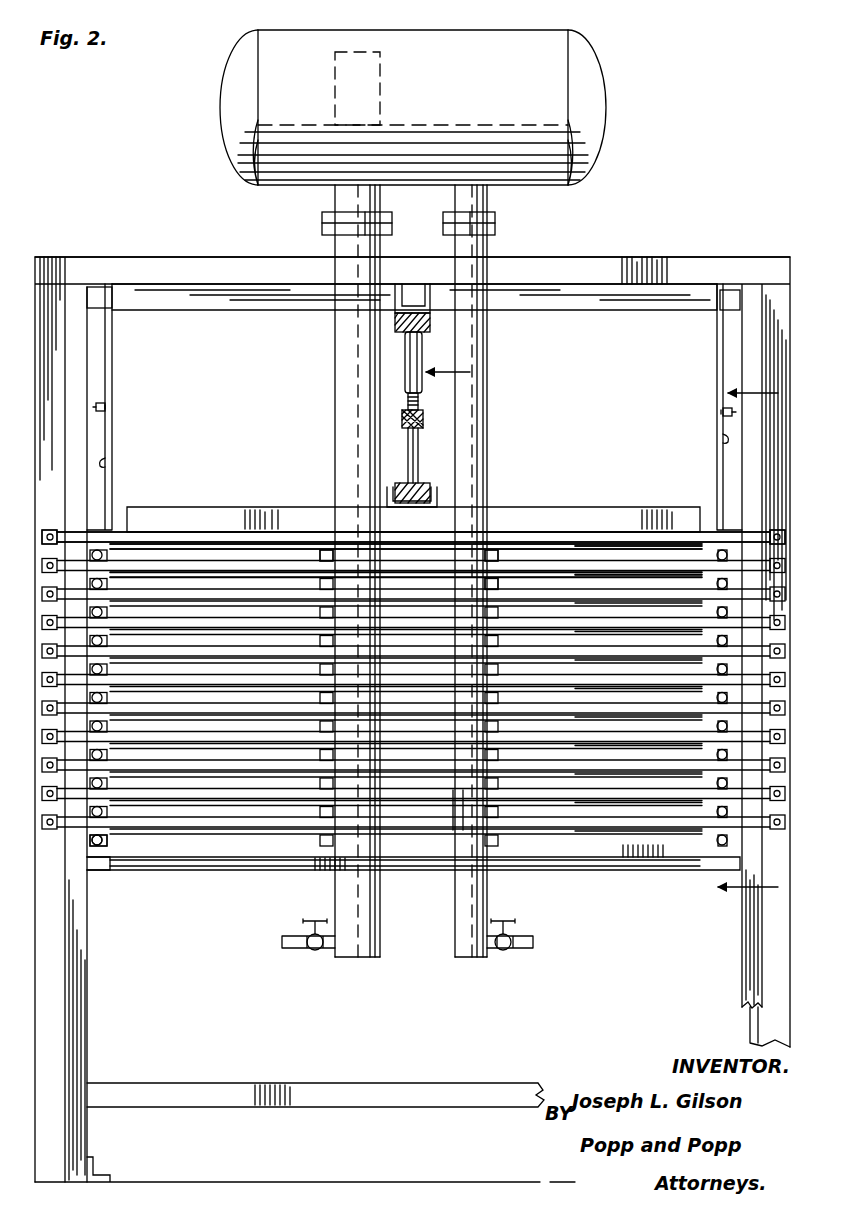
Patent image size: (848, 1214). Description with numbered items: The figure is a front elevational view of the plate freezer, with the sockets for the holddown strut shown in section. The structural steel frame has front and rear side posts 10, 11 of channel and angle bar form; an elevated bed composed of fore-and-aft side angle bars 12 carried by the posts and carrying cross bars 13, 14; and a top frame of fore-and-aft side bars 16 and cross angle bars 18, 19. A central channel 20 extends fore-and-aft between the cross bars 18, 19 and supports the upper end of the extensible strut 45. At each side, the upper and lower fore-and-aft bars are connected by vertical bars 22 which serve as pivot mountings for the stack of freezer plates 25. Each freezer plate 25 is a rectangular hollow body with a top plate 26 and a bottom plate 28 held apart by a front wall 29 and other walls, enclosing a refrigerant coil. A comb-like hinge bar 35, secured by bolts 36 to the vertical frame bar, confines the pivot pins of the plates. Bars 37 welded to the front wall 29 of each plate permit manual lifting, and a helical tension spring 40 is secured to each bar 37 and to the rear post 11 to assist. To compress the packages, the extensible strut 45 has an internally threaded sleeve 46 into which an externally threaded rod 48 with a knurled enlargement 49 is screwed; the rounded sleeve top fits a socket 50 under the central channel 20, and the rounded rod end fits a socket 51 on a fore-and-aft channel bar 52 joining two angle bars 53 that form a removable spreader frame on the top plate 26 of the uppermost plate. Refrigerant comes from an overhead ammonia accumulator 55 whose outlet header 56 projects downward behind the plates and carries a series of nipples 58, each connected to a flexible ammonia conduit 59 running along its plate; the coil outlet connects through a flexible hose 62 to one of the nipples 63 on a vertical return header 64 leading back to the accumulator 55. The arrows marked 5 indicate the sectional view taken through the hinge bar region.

The section line 5 is at (749, 624).
The front side post 10 is at (82, 975).
The rear side post 11 is at (55, 1012).
The side angle bar 12 is at (92, 870).
The cross bar 13 is at (413, 852).
The cross bar 14 is at (236, 870).
The side bar 16 is at (97, 287).
The cross angle bar 18 is at (629, 270).
The cross angle bar 19 is at (623, 310).
The central channel 20 is at (432, 302).
The vertical bar 22 is at (112, 364).
The freezer plate 25 is at (290, 545).
The top plate 26 is at (437, 795).
The bottom plate 28 is at (463, 830).
The front wall 29 is at (552, 795).
The hinge bar 35 is at (106, 463).
The bolt 36 is at (106, 409).
The bar 37 is at (178, 560).
The helical tension spring 40 is at (50, 530).
The extensible strut 45 is at (470, 372).
The internally threaded sleeve 46 is at (414, 352).
The externally threaded rod 48 is at (419, 440).
The knurled enlargement 49 is at (425, 418).
The socket 50 is at (432, 325).
The socket 51 is at (432, 488).
The fore-and-aft channel bar 52 is at (438, 495).
The angle bar 53 is at (605, 515).
The ammonia accumulator 55 is at (413, 107).
The outlet header 56 is at (478, 387).
The nipple 58 is at (500, 582).
The flexible ammonia conduit 59 is at (566, 583).
The flexible hose 62 is at (104, 835).
The nipple 63 is at (322, 548).
The vertical return header 64 is at (336, 383).